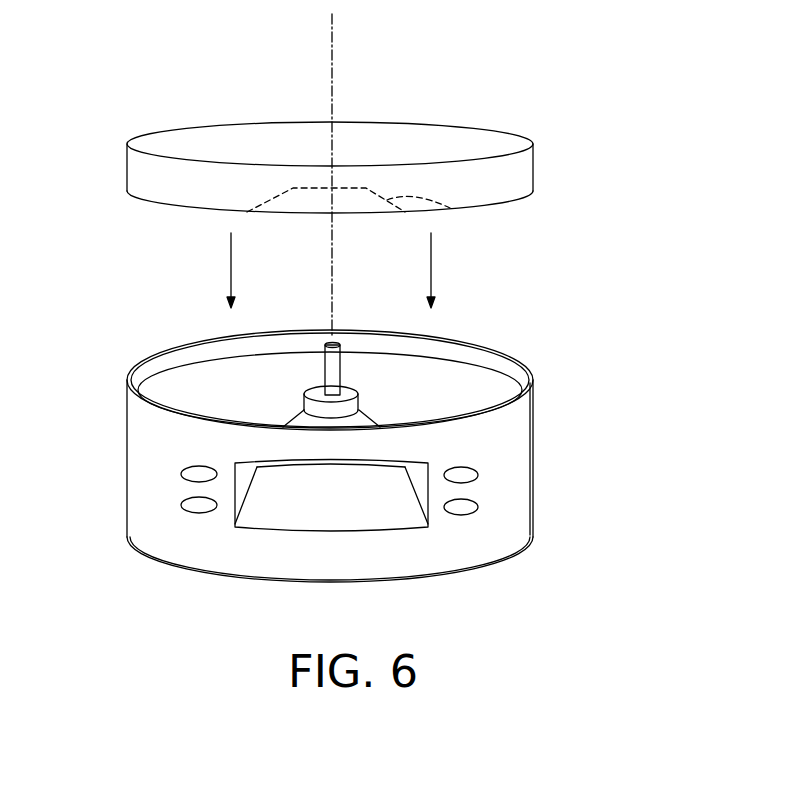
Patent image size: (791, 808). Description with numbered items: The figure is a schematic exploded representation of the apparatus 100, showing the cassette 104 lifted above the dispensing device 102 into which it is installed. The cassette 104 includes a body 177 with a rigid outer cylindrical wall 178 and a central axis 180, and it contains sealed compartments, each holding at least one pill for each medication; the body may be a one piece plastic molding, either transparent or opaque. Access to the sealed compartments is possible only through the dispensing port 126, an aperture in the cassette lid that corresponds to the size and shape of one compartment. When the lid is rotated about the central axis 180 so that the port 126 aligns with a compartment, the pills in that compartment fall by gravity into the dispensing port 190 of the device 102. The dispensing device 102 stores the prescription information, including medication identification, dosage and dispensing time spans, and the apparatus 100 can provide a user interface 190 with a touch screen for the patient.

The apparatus 100 is at (537, 92).
The dispensing device 102 is at (538, 458).
The cassette 104 is at (276, 110).
The dispensing port 126 is at (450, 208).
The body 177 is at (196, 127).
The rigid outer cylindrical wall 178 is at (127, 178).
The central axis 180 is at (333, 62).
The dispensing port / user interface 190 is at (383, 528).